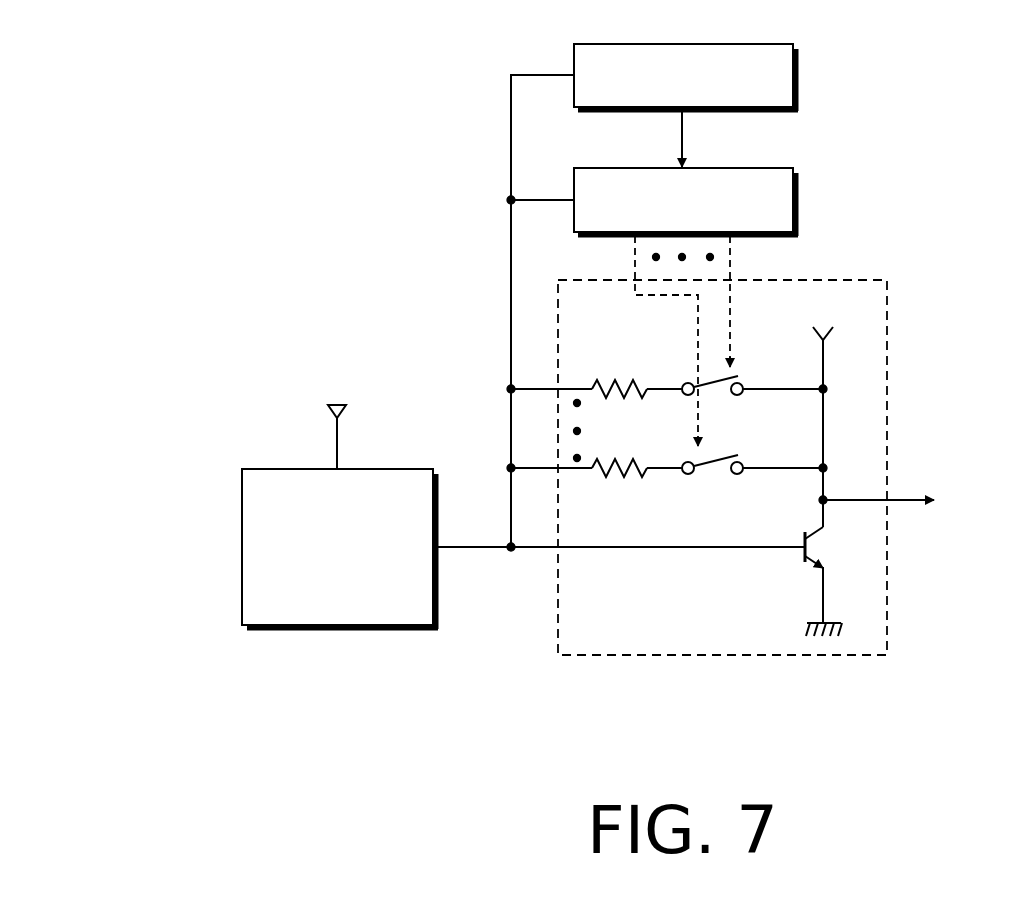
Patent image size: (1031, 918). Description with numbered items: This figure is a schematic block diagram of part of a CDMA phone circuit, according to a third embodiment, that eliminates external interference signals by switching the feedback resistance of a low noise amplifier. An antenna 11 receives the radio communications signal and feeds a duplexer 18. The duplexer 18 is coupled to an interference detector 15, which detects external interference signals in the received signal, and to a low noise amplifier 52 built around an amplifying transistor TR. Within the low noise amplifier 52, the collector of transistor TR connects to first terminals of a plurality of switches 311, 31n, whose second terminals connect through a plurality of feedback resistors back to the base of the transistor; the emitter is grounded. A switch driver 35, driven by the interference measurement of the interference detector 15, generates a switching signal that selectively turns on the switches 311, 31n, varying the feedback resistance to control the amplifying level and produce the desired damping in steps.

The antenna 11 is at (337, 405).
The interference detector 15 is at (797, 76).
The duplexer 18 is at (242, 547).
The switch driver 35 is at (797, 201).
The low noise amplifier 52 is at (887, 389).
The switch 311 is at (667, 391).
The switch 31n is at (667, 472).